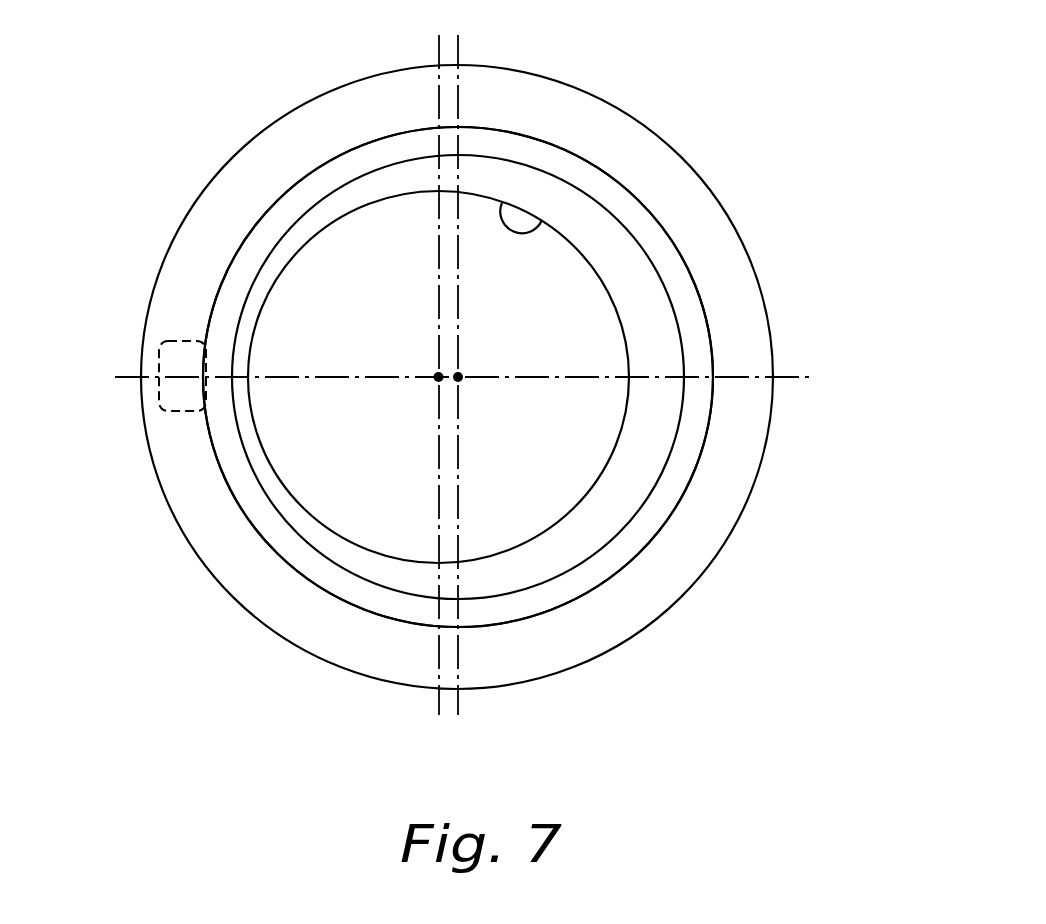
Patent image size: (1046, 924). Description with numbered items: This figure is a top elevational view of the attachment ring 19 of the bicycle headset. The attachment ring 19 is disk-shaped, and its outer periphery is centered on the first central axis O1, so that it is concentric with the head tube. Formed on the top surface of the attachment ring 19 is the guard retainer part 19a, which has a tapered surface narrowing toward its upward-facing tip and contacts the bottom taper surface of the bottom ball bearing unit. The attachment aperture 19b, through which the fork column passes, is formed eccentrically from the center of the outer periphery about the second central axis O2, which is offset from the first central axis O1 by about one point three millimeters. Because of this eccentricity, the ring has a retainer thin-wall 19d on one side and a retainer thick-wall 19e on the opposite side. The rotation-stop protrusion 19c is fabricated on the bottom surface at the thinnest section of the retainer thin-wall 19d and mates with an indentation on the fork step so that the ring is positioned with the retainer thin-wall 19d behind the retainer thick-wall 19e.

The attachment ring 19 is at (730, 183).
The guard retainer part 19a is at (617, 553).
The attachment aperture 19b is at (537, 227).
The rotation-stop protrusion 19c is at (173, 413).
The retainer thin-wall 19d is at (180, 305).
The retainer thick-wall 19e is at (748, 427).
The first central axis O1 is at (461, 375).
The second central axis O2 is at (435, 374).